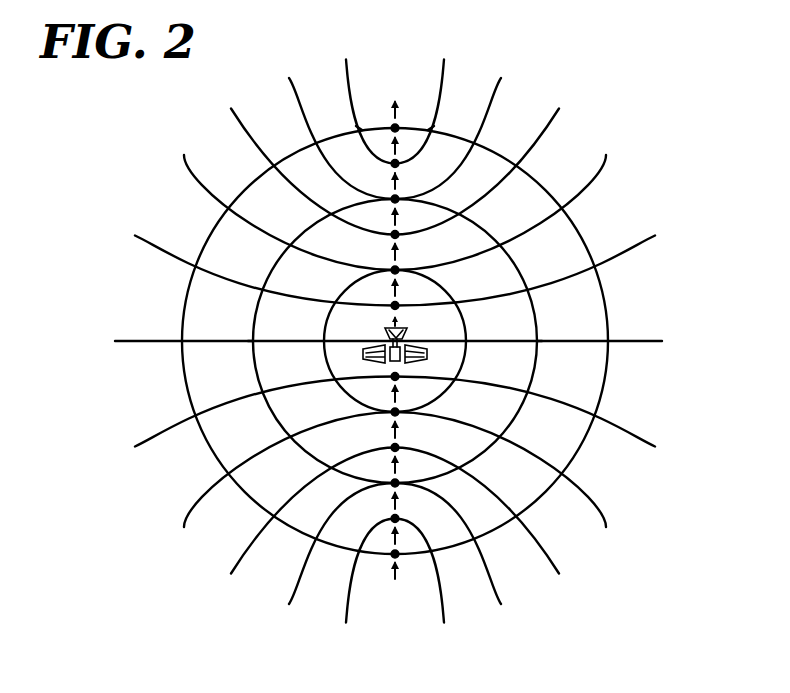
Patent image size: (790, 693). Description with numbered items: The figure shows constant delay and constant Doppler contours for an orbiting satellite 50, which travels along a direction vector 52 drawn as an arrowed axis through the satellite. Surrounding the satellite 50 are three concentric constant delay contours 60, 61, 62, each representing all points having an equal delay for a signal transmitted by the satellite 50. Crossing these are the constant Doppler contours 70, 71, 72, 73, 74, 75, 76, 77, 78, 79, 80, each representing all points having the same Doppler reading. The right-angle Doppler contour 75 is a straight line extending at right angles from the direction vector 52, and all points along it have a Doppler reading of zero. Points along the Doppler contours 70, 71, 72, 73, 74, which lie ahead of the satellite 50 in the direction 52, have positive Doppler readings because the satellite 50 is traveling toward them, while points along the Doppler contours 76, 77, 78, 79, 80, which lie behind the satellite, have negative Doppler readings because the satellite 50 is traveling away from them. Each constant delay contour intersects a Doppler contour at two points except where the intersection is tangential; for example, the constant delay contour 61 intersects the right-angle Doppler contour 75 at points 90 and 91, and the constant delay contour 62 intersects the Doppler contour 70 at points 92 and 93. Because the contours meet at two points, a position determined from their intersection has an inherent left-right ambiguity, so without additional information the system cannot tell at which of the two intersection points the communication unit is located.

The orbiting satellite 50 is at (391, 334).
The direction of travel 52 is at (391, 250).
The constant delay contour 60 is at (465, 362).
The constant delay contour 61 is at (520, 408).
The constant delay contour 62 is at (545, 495).
The constant Doppler contour 70 is at (446, 73).
The constant Doppler contour 71 is at (498, 94).
The constant Doppler contour 72 is at (556, 121).
The constant Doppler contour 73 is at (608, 166).
The constant Doppler contour 74 is at (648, 242).
The right-angle Doppler contour 75 is at (657, 341).
The constant Doppler contour 76 is at (146, 444).
The constant Doppler contour 77 is at (196, 522).
The constant Doppler contour 78 is at (240, 563).
The constant Doppler contour 79 is at (294, 593).
The constant Doppler contour 80 is at (348, 612).
The intersection point 90 is at (254, 343).
The intersection point 91 is at (541, 343).
The intersection point 92 is at (361, 128).
The intersection point 93 is at (463, 116).